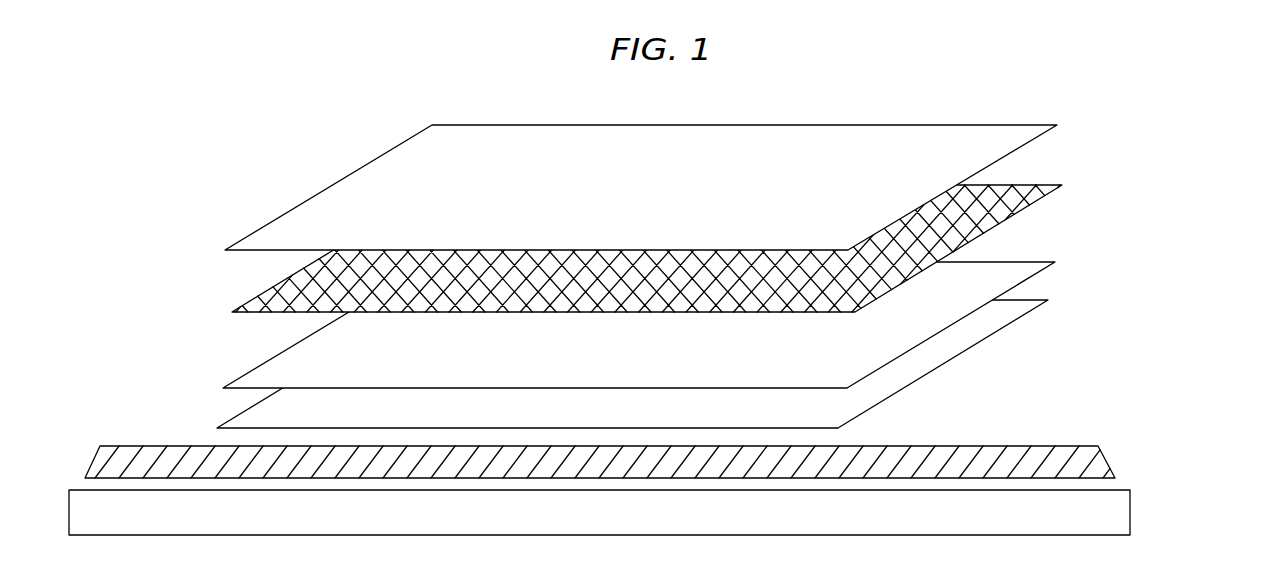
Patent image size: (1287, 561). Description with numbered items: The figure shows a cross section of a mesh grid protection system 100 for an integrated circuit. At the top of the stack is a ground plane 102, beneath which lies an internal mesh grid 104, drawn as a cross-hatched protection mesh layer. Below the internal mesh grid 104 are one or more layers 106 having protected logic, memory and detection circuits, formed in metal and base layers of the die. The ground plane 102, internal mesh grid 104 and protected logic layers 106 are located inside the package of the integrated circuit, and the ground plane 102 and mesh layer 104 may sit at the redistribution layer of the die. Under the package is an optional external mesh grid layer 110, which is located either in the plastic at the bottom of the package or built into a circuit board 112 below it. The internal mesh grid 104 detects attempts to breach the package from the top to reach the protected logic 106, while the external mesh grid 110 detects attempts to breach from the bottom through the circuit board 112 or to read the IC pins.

The mesh grid protection system 100 is at (264, 158).
The ground plane 102 is at (1027, 134).
The internal mesh grid 104 is at (1035, 195).
The layers having protected logic 106 is at (1063, 257).
The external mesh grid layer 110 is at (1106, 463).
The circuit board 112 is at (1131, 513).